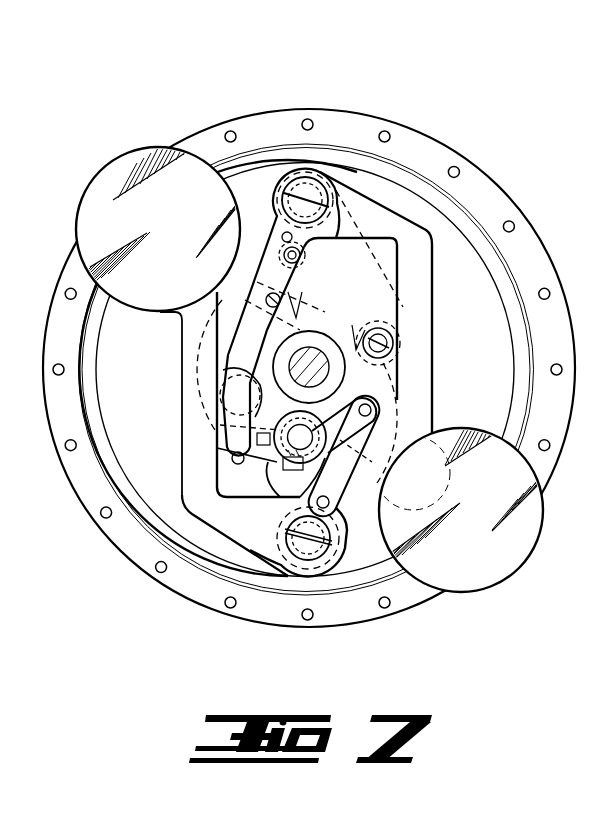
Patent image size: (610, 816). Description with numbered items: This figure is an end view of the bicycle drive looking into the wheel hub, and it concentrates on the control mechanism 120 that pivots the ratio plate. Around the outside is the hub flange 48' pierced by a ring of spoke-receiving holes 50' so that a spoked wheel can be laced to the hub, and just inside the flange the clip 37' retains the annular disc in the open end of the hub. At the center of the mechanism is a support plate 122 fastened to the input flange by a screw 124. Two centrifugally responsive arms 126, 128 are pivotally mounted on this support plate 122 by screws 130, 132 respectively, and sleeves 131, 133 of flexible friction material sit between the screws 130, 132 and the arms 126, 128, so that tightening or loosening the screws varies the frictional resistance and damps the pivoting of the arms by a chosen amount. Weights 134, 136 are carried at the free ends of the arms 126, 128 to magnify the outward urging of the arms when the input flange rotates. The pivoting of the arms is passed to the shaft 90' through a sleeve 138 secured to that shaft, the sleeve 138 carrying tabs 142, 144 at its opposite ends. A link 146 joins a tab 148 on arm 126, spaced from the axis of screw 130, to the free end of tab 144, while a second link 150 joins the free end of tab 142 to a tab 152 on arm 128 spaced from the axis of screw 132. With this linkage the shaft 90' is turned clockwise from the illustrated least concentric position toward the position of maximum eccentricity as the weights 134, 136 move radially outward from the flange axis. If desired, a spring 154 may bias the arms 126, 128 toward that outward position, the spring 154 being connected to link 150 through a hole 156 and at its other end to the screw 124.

The clip 37' is at (306, 369).
The flange 48' is at (309, 368).
The spoke-receiving holes 50' is at (307, 369).
The shaft 90' is at (355, 325).
The control mechanism 120 is at (175, 400).
The support plate 122 is at (398, 222).
The screw 124 is at (393, 300).
The centrifugally responsive arm 126 is at (182, 422).
The centrifugally responsive arm 128 is at (432, 403).
The screw 130 is at (332, 550).
The sleeve of flexible friction material 131 is at (303, 505).
The screw 132 is at (303, 186).
The sleeve of flexible friction material 133 is at (308, 178).
The weight 134 is at (93, 186).
The weight 136 is at (525, 560).
The sleeve 138 is at (220, 453).
The tab 142 is at (260, 497).
The tab 144 is at (346, 378).
The link 146 is at (345, 478).
The tab 148 is at (343, 517).
The second link 150 is at (243, 305).
The tab 152 is at (262, 228).
The spring 154 is at (343, 300).
The hole 156 is at (266, 296).